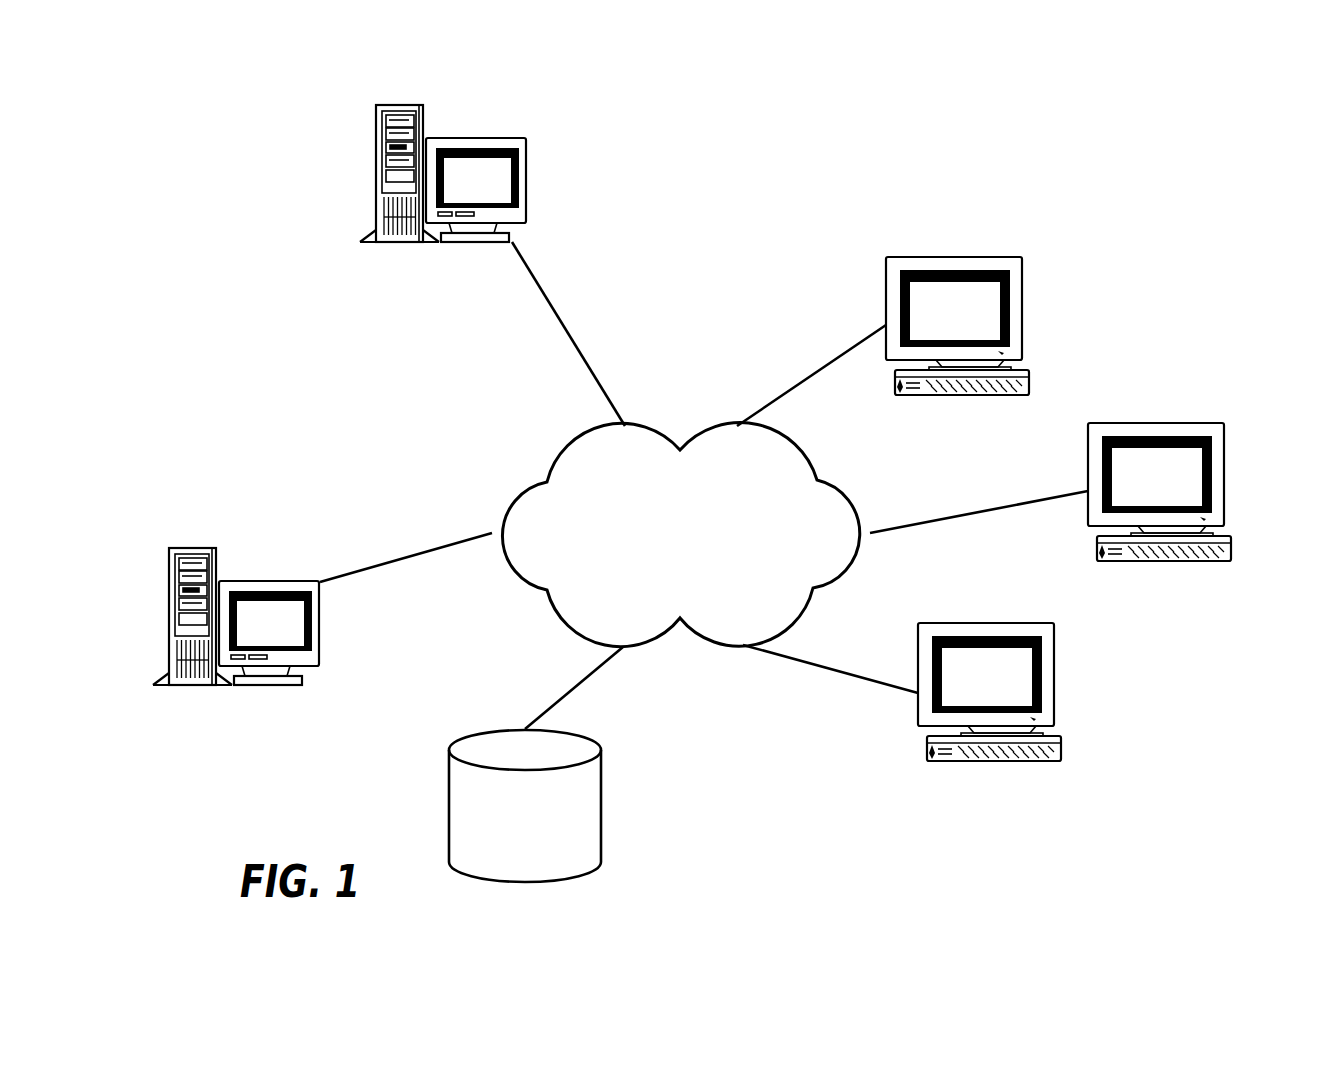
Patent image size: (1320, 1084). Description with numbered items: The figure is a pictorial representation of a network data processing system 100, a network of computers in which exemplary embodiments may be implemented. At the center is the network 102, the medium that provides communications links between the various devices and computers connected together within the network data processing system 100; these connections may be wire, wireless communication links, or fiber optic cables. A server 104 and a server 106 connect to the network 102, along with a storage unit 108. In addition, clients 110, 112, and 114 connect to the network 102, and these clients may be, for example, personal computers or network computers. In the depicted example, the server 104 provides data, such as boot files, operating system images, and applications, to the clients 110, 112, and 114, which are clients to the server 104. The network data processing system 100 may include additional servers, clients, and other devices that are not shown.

The network data processing system 100 is at (1060, 140).
The network 102 is at (556, 452).
The server 104 is at (258, 580).
The server 106 is at (475, 138).
The storage unit 108 is at (602, 803).
The client 110 is at (955, 256).
The client 112 is at (1157, 422).
The client 114 is at (987, 622).